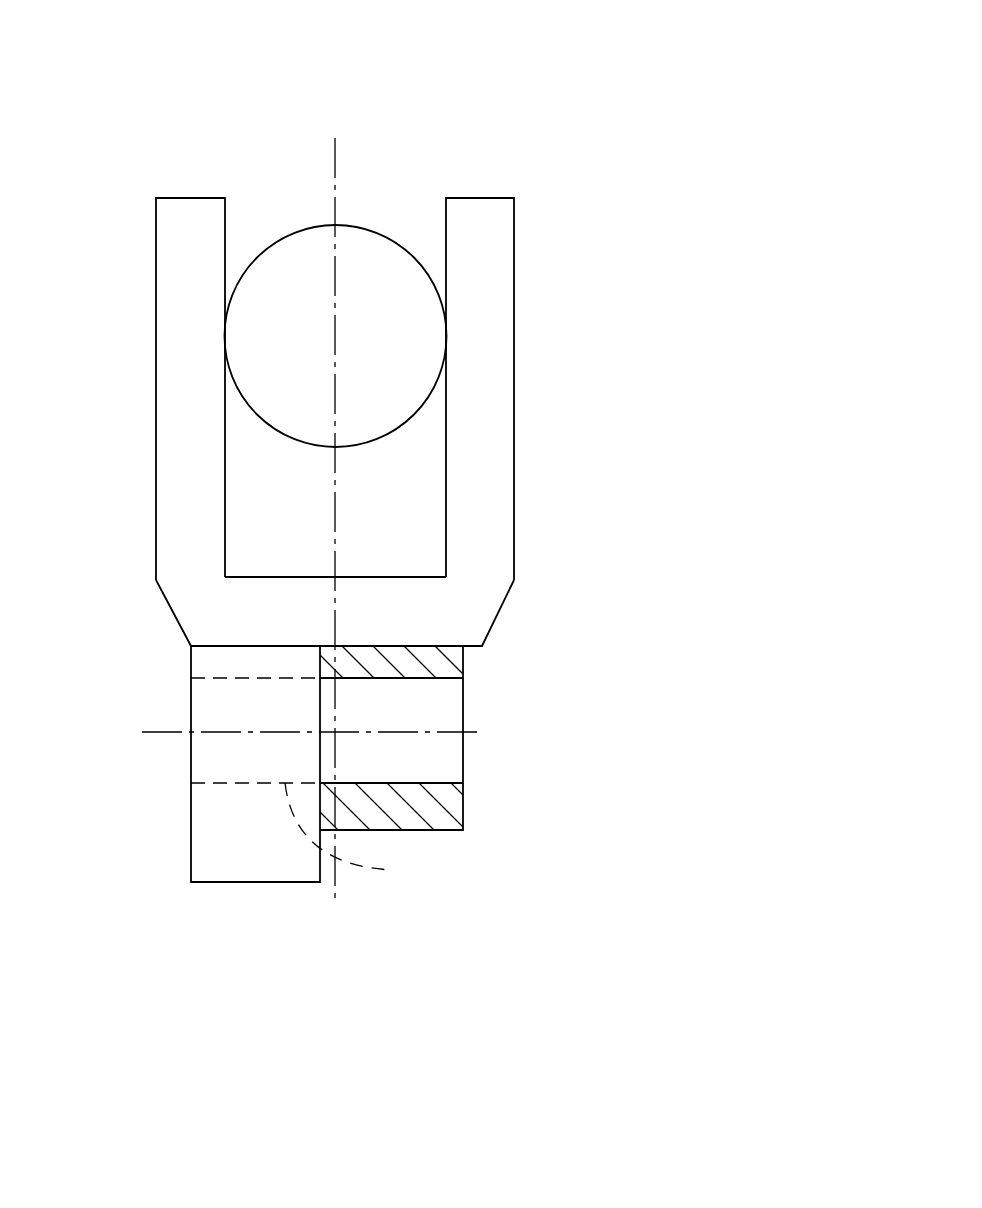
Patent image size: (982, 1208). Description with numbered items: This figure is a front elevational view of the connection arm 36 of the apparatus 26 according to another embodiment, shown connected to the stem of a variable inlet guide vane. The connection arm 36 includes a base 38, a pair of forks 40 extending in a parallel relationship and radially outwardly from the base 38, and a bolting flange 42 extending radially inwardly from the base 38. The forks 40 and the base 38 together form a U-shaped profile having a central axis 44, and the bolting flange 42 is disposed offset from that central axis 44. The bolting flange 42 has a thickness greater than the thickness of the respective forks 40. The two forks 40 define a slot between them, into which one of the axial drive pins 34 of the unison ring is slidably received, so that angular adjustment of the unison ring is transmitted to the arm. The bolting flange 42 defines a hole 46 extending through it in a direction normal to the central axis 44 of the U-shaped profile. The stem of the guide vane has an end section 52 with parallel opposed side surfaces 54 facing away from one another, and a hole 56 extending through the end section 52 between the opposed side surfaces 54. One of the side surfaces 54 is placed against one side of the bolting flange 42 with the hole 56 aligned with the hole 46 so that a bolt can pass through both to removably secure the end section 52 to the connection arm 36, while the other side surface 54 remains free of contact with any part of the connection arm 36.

The apparatus 26 is at (545, 118).
The drive pin 34 is at (289, 235).
The connection arm 36 is at (514, 355).
The base 38 is at (223, 607).
The forks 40 is at (507, 228).
The bolting flange 42 is at (191, 827).
The central axis 44 is at (333, 172).
The hole 46 is at (310, 782).
The end section 52 is at (447, 667).
The opposed side surfaces 54 is at (320, 662).
The hole 56 is at (443, 707).